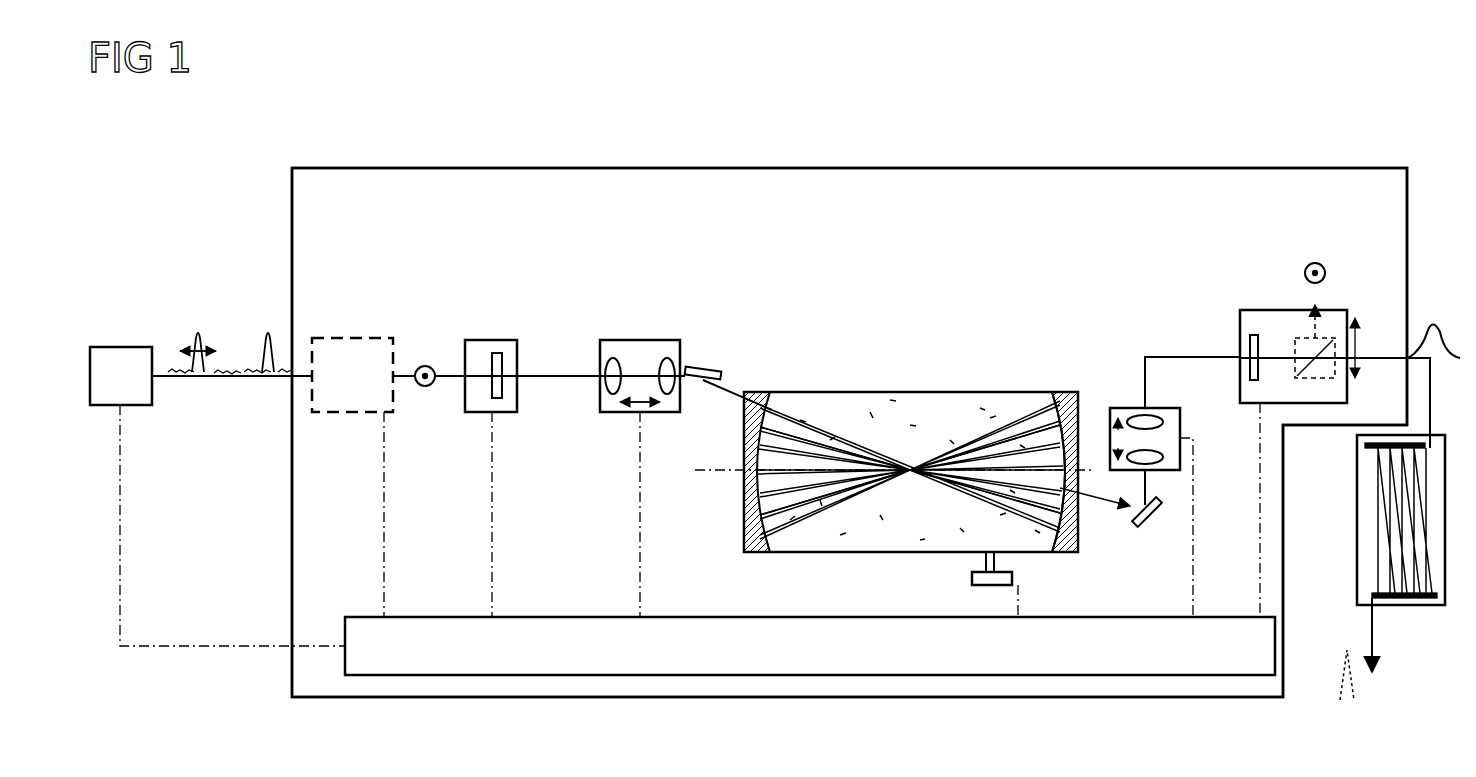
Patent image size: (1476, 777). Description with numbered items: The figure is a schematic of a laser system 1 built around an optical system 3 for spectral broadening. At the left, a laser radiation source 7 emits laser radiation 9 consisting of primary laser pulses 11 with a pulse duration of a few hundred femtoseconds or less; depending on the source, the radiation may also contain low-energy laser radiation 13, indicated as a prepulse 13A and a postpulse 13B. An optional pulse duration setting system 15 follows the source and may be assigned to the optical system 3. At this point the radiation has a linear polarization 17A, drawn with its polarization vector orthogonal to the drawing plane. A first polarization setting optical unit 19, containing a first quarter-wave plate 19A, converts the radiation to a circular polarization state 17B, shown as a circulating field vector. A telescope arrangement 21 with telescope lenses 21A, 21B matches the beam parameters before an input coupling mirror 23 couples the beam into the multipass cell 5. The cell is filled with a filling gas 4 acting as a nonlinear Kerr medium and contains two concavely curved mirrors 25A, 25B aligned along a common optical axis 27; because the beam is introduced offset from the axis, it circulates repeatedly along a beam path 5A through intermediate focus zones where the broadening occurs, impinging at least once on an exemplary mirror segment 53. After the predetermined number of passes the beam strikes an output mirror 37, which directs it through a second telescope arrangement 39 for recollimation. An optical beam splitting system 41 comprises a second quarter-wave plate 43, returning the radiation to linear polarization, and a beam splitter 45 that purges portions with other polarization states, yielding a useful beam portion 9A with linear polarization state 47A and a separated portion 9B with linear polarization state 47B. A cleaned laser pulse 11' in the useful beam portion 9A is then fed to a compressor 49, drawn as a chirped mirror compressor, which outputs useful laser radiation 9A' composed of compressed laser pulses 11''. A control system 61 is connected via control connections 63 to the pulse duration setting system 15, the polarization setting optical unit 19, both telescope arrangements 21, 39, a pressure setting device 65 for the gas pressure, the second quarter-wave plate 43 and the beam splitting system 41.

The laser system 1 is at (210, 128).
The optical system 3 is at (790, 168).
The laser radiation source 7 is at (104, 405).
The laser radiation 9 is at (226, 448).
The useful beam portion 9A is at (1388, 401).
The useful laser radiation 9A' is at (1338, 635).
The laser radiation 9B is at (1310, 322).
The laser pulses 11 is at (227, 324).
The laser pulse 11' is at (1438, 310).
The compressed laser pulses 11'' is at (1387, 682).
The low-energy laser radiation 13 is at (213, 397).
The prepulse 13A is at (281, 397).
The postpulse 13B is at (165, 355).
The pulse duration setting system 15 is at (340, 338).
The linear polarization 17A is at (432, 340).
The circular polarization state 17B is at (555, 322).
The first polarization setting optical unit 19 is at (495, 340).
The first λ/4 waveplate 19A is at (498, 398).
The telescope arrangement 21 is at (633, 340).
The telescope lens 21A is at (606, 350).
The telescope lens 21B is at (670, 350).
The input coupling mirror 23 is at (704, 367).
The concavely curved mirror 25A is at (758, 552).
The concavely curved mirror 25B is at (1078, 522).
The optical axis 27 is at (698, 470).
The filling gas 4 is at (896, 552).
The multipass cell 5 is at (905, 385).
The beam path 5A is at (970, 416).
The mirror segment 53 is at (1062, 398).
The output mirror 37 is at (1152, 520).
The second telescope arrangement 39 is at (1125, 408).
The optical beam splitting system 41 is at (1243, 312).
The second λ/4 waveplate 43 is at (1254, 380).
The beam splitter 45 is at (1326, 338).
The linear polarization state 47A is at (1360, 330).
The linear polarization state 47B is at (1325, 262).
The compressor 49 is at (1412, 606).
The control system 61 is at (450, 617).
The control connections 63 is at (338, 645).
The pressure setting device 65 is at (972, 578).